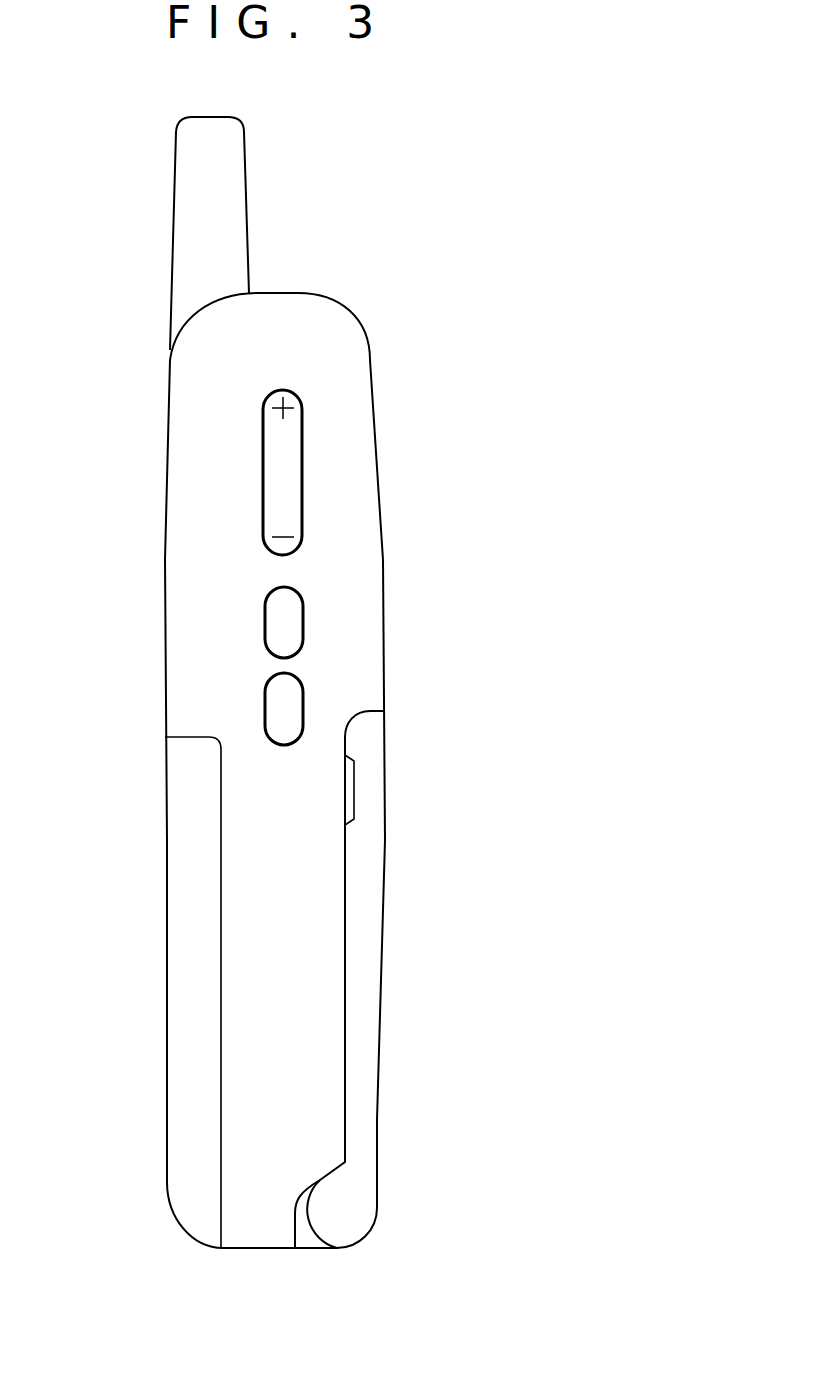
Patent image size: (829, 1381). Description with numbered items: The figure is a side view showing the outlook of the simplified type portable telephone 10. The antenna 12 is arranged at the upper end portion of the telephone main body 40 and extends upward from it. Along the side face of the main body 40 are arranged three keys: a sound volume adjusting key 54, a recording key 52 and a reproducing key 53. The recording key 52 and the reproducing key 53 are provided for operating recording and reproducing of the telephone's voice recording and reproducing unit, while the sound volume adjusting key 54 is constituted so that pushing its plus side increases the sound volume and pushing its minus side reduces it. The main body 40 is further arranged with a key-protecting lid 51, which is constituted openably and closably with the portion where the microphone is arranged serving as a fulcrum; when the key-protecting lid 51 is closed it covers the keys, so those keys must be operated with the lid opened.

The telephone 10 is at (163, 1232).
The antenna 12 is at (224, 160).
The telephone main body 40 is at (349, 367).
The key-protecting lid 51 is at (368, 902).
The recording key 52 is at (265, 625).
The reproducing key 53 is at (265, 712).
The sound volume adjusting key 54 is at (265, 476).